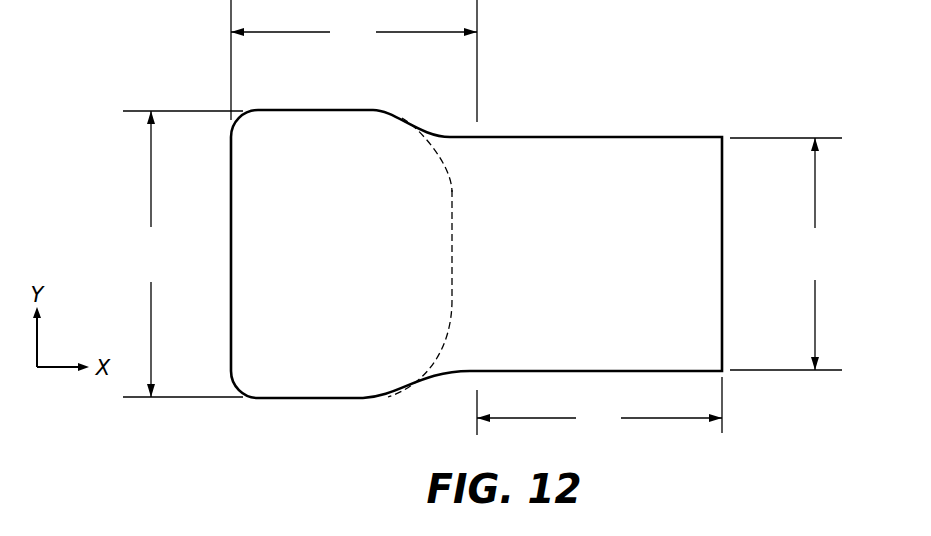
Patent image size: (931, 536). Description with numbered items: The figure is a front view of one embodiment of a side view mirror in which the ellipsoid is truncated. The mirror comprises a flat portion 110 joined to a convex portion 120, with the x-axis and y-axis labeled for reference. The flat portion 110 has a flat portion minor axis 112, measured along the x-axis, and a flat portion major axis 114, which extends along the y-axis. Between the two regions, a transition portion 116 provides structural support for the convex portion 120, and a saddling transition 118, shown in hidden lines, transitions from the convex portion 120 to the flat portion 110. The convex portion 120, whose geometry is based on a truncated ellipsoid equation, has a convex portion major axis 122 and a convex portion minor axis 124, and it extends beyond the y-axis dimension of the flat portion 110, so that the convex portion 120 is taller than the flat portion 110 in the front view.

The flat portion 110 is at (574, 271).
The flat portion minor axis 112 is at (599, 406).
The flat portion major axis 114 is at (786, 254).
The transition portion 116 is at (446, 133).
The saddling transition 118 is at (452, 220).
The convex portion 120 is at (356, 271).
The convex portion major axis 122 is at (183, 254).
The convex portion minor axis 124 is at (354, 61).